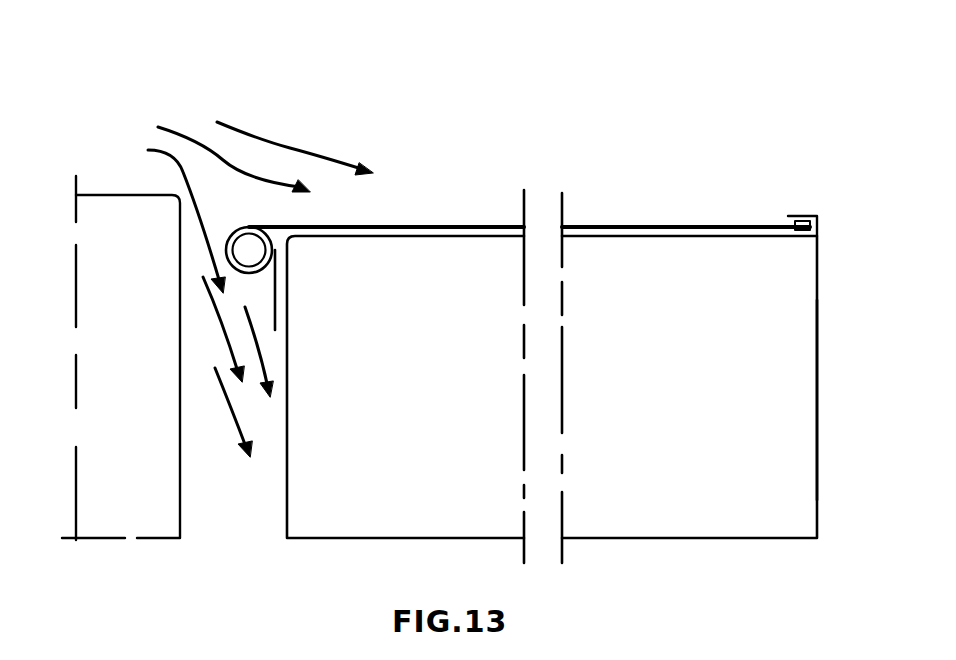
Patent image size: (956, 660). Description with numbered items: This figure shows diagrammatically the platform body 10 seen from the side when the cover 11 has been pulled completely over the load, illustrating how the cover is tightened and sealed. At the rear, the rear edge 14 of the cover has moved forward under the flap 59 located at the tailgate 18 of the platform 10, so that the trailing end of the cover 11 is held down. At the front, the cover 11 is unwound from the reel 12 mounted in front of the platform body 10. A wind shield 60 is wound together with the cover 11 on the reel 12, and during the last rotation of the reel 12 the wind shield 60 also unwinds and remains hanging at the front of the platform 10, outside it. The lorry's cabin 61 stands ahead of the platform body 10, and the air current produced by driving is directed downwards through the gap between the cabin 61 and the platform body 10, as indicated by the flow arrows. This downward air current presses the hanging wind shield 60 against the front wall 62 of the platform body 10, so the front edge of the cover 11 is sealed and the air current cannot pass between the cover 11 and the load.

The platform body 10 is at (723, 560).
The cover 11 is at (647, 223).
The reel 12 is at (242, 233).
The rear edge of the cover 14 is at (798, 212).
The tailgate 18 is at (818, 382).
The flap 59 is at (808, 212).
The wind shield 60 is at (281, 293).
The lorry's cabin 61 is at (92, 275).
The front wall of the platform body 62 is at (287, 470).